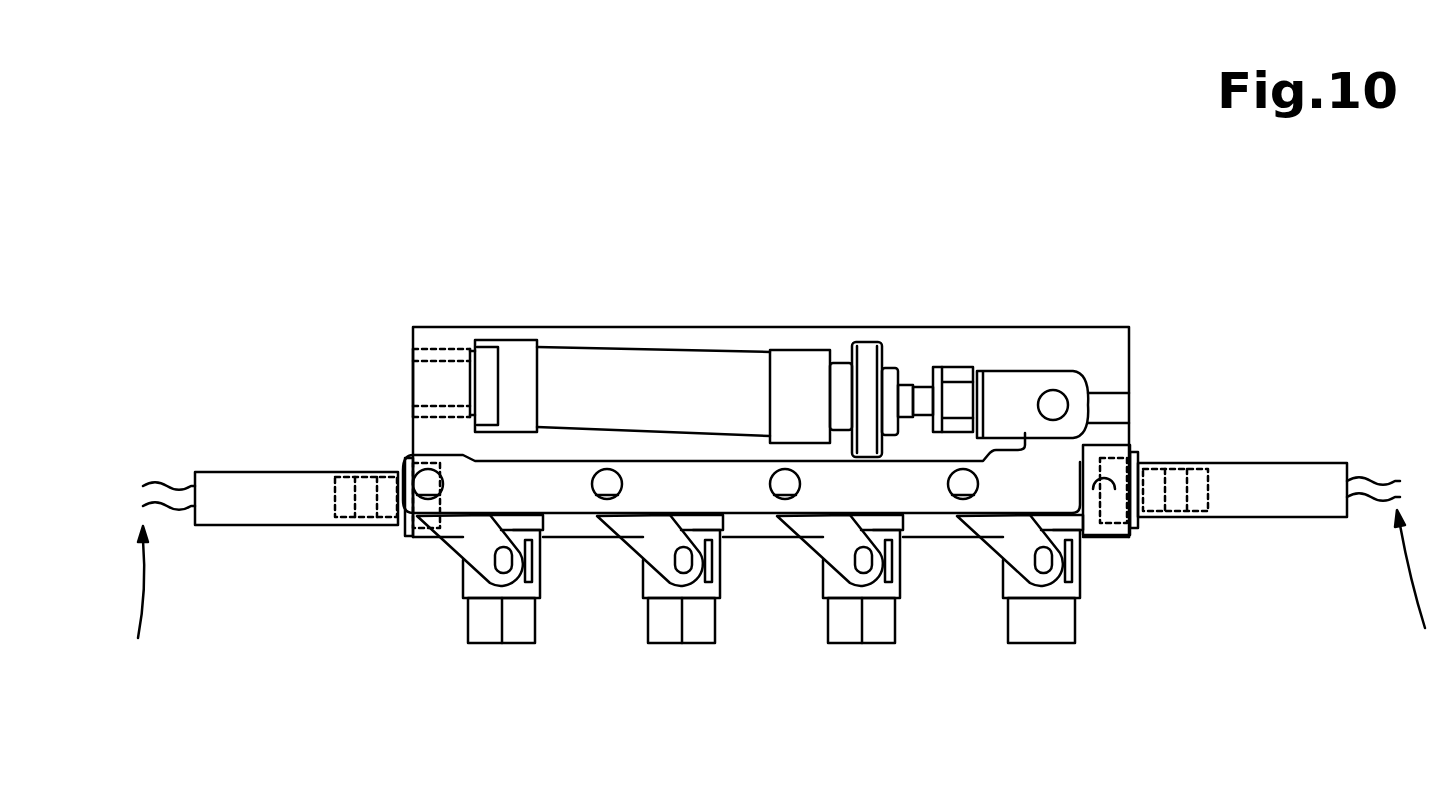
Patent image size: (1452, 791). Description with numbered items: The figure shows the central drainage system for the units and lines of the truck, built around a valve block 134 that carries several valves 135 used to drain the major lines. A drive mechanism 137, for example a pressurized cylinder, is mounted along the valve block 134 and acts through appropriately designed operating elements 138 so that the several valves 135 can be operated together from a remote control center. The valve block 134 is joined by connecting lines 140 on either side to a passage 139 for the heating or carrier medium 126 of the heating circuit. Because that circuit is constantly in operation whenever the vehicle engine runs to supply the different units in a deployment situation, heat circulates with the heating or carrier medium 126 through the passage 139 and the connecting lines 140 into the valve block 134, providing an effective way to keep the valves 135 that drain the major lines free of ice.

The heating or carrier medium 126 is at (784, 600).
The valve block 134 is at (1105, 356).
The valves 135 is at (532, 585).
The drive mechanism 137 is at (625, 390).
The operating elements 138 is at (1058, 455).
The passage 139 is at (1100, 485).
The connecting lines 140 is at (267, 497).